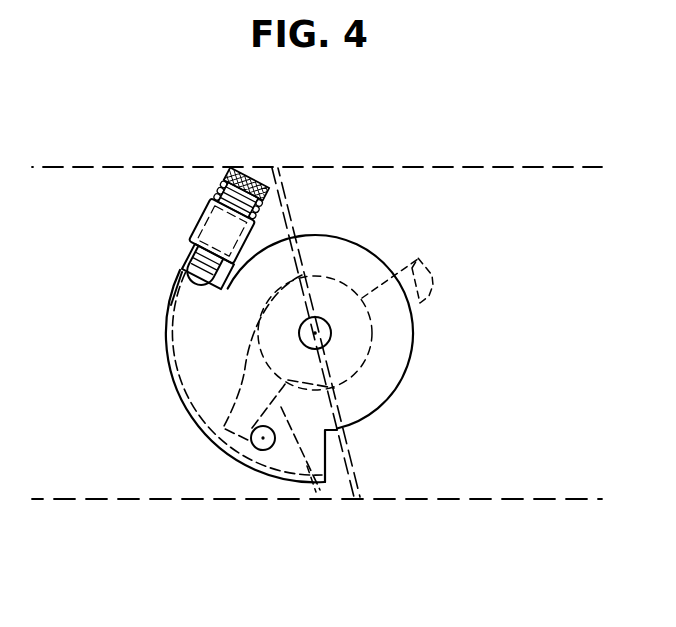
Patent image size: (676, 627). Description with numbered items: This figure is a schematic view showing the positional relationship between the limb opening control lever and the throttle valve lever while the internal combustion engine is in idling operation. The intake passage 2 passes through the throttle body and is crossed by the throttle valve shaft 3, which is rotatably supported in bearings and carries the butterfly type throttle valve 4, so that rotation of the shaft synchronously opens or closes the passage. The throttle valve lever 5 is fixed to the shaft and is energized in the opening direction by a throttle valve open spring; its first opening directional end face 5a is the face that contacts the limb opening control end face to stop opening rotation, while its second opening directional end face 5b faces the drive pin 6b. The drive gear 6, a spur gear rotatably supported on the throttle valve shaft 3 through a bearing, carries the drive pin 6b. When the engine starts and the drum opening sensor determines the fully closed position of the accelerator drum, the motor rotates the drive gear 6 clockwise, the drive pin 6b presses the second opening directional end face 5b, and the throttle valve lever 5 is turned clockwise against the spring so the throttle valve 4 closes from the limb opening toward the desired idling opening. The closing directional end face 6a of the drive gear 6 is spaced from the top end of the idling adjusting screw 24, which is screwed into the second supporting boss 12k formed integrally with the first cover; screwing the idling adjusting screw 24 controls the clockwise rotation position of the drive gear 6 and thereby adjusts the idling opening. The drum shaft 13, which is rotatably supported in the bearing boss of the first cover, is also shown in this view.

The intake passage 2 is at (485, 498).
The throttle valve shaft 3 is at (332, 340).
The throttle valve 4 is at (357, 466).
The throttle valve lever 5 is at (422, 304).
The first opening directional end face 5a is at (416, 260).
The second opening directional end face 5b is at (311, 508).
The drive gear 6 is at (366, 244).
The closing directional end face 6a is at (197, 280).
The drive pin 6b is at (263, 450).
The second supporting boss 12k is at (200, 223).
The drum shaft 13 is at (425, 377).
The idling adjusting screw 24 is at (226, 168).